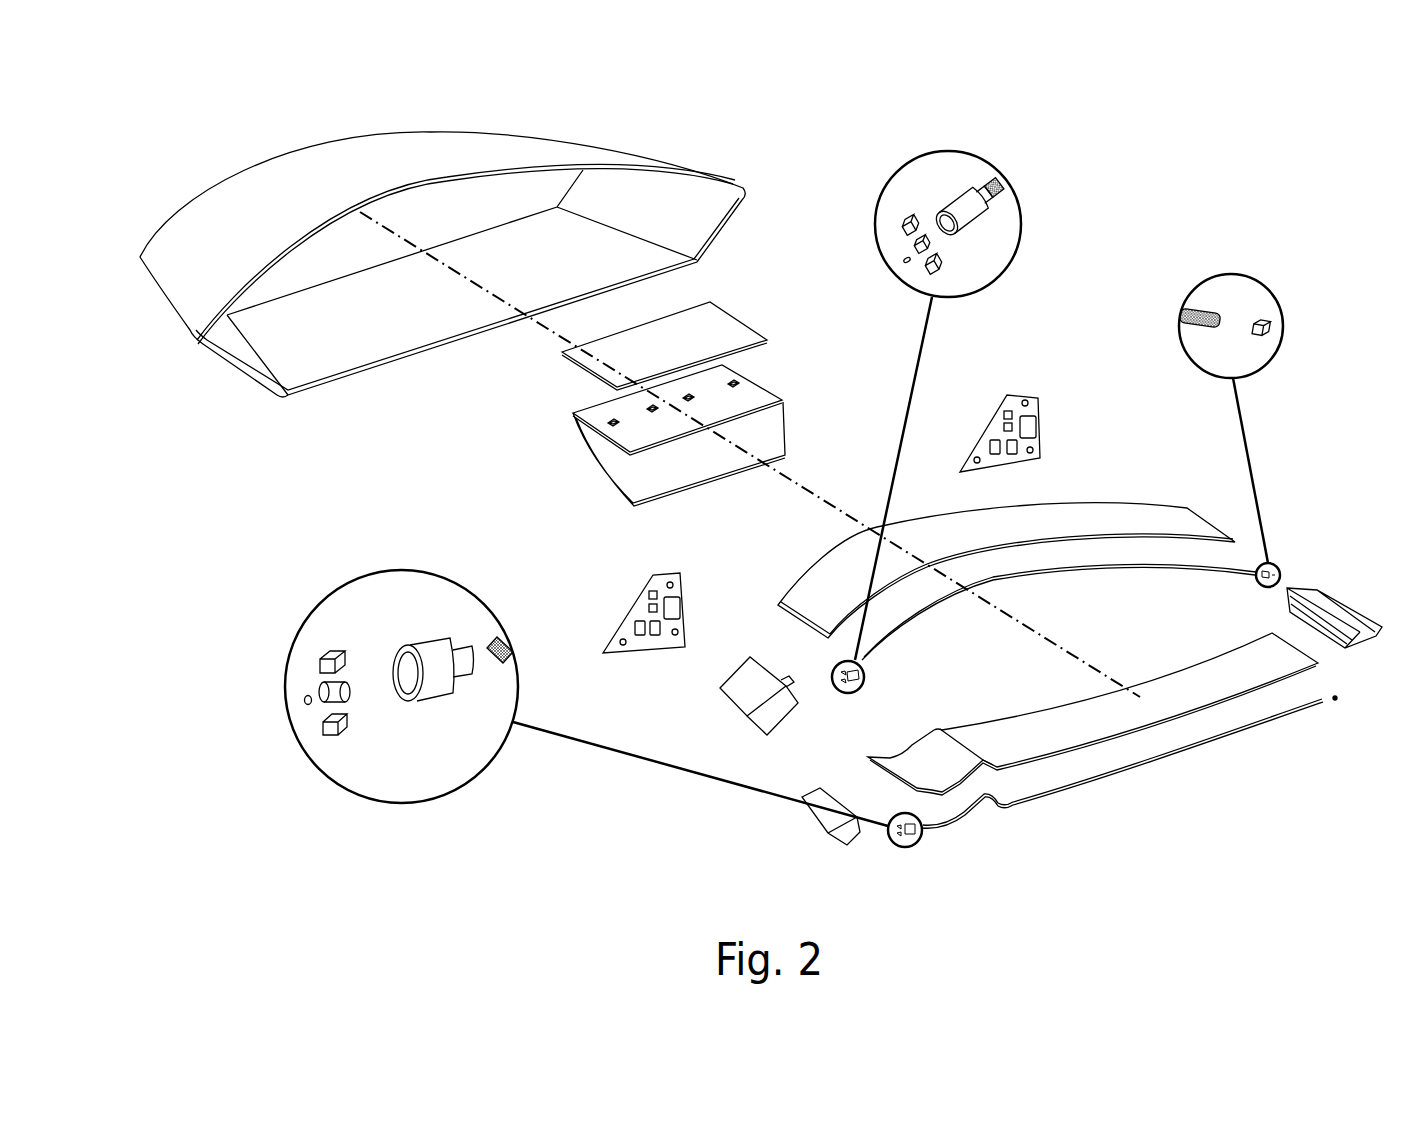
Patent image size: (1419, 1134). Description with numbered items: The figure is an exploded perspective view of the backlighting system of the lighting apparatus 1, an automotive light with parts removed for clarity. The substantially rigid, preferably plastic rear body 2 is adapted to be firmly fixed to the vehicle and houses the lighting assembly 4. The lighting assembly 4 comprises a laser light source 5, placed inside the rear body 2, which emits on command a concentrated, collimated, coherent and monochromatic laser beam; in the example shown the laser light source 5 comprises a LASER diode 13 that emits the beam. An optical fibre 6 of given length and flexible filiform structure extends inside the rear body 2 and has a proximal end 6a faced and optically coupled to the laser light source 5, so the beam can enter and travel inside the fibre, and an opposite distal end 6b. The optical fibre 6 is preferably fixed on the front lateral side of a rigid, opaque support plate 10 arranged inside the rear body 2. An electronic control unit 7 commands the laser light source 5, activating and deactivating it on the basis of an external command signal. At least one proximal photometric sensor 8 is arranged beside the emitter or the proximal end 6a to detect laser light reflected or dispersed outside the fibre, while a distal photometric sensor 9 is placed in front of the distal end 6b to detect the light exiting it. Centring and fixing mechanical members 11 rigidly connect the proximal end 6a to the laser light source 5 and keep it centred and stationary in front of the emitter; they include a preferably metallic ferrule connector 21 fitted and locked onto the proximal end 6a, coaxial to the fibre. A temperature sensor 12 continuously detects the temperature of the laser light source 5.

The lighting apparatus 1 is at (228, 139).
The rear body 2 is at (418, 145).
The lighting assembly 4 is at (1050, 583).
The laser light source 5 is at (940, 250).
The optical fibre 6 is at (908, 490).
The proximal end 6a is at (484, 645).
The distal end 6b is at (1230, 314).
The electronic control unit 7 is at (637, 594).
The proximal photometric sensor 8 is at (320, 657).
The distal photometric sensor 9 is at (323, 731).
The support plate 10 is at (1100, 513).
The centring and fixing mechanical members 11 is at (723, 471).
The temperature sensor 12 is at (305, 701).
The LASER diode 13 is at (342, 686).
The ferrule connector 21 is at (423, 647).